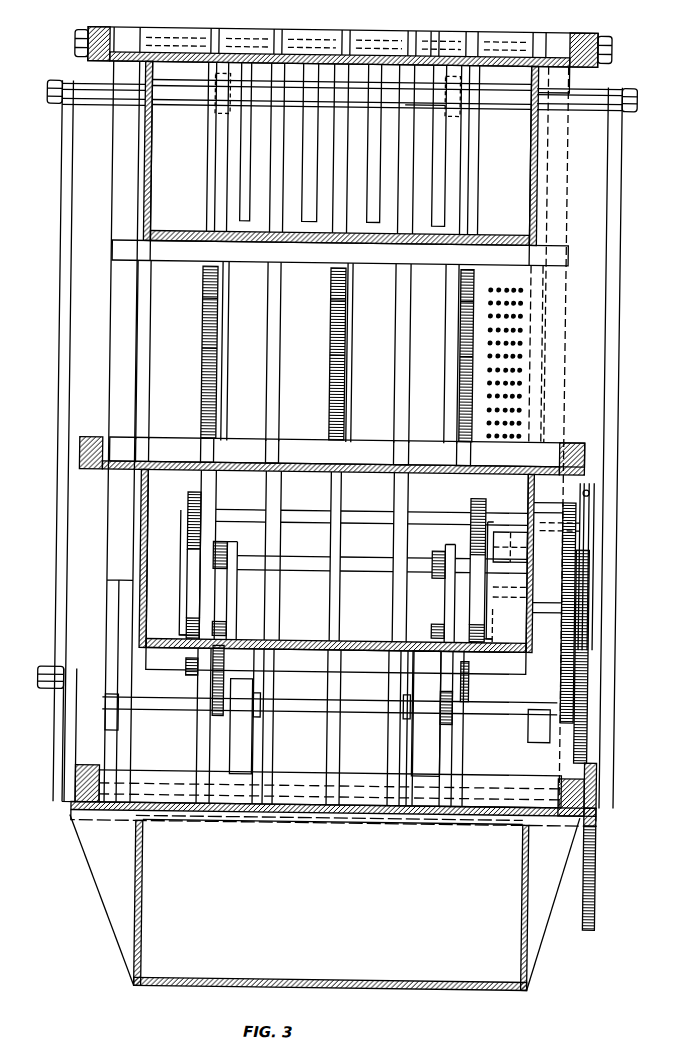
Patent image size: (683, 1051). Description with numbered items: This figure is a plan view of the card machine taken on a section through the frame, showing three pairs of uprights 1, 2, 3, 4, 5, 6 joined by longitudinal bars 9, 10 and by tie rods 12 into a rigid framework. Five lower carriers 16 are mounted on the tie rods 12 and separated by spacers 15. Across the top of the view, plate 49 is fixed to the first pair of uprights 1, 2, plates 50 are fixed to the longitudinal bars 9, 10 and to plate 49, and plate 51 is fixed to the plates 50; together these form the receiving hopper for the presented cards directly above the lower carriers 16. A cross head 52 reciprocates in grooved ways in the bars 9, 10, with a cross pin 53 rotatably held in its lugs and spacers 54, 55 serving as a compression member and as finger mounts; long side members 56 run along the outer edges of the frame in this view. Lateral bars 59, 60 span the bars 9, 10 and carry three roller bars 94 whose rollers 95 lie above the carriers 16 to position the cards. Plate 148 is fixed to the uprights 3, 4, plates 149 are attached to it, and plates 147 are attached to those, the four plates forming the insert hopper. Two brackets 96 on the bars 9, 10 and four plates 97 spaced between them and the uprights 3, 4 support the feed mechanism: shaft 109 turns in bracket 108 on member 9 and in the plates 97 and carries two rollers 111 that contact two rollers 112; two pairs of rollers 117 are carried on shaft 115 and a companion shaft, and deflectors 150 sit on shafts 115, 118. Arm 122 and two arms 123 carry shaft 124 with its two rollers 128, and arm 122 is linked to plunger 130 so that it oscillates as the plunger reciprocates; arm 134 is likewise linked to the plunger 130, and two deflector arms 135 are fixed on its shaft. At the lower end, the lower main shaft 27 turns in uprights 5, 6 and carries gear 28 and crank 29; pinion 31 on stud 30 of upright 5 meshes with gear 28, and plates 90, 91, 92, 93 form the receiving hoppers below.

The upright 1 is at (580, 33).
The upright 2 is at (96, 32).
The upright 3 is at (578, 440).
The upright 4 is at (90, 440).
The upright 5 is at (574, 776).
The upright 6 is at (91, 768).
The longitudinal bar 9 is at (563, 163).
The longitudinal bar 10 is at (110, 153).
The tie rod 12 is at (493, 42).
The spacer 15 is at (434, 40).
The lower carrier 16 is at (270, 291).
The lower main shaft 27 is at (243, 813).
The gear 28 is at (600, 886).
The crank 29 is at (66, 765).
The stud 30 is at (592, 797).
The pinion 31 is at (600, 821).
The plate 49 is at (576, 70).
The plate 50 is at (148, 118).
The plate 51 is at (182, 233).
The cross head 52 is at (240, 145).
The cross pin 53 is at (490, 100).
The spacer 54 is at (80, 95).
The spacer 55 is at (420, 104).
The side rods 56 is at (57, 283).
The lateral bar 59 is at (182, 440).
The lateral bar 60 is at (565, 258).
The plate 90 is at (360, 813).
The plate 91 is at (315, 988).
The plate 92 is at (147, 882).
The plate 93 is at (527, 885).
The roller bar 94 is at (216, 331).
The roller 95 is at (205, 375).
The bracket 96 is at (121, 722).
The plate 97 is at (331, 492).
The bracket 108 is at (540, 540).
The shaft 109 is at (372, 520).
The roller 111 is at (190, 508).
The roller 112 is at (195, 494).
The shaft 115 is at (495, 655).
The roller 117 is at (226, 665).
The shaft 118 is at (298, 708).
The arm 122 is at (576, 598).
The arm 123 is at (230, 592).
The shaft 124 is at (308, 566).
The roller 128 is at (221, 552).
The plunger 130 is at (586, 490).
The arm 134 is at (578, 512).
The deflector arm 135 is at (181, 583).
The plate 147 is at (362, 648).
The plate 148 is at (449, 381).
The plate 149 is at (181, 604).
The deflector 150 is at (430, 735).